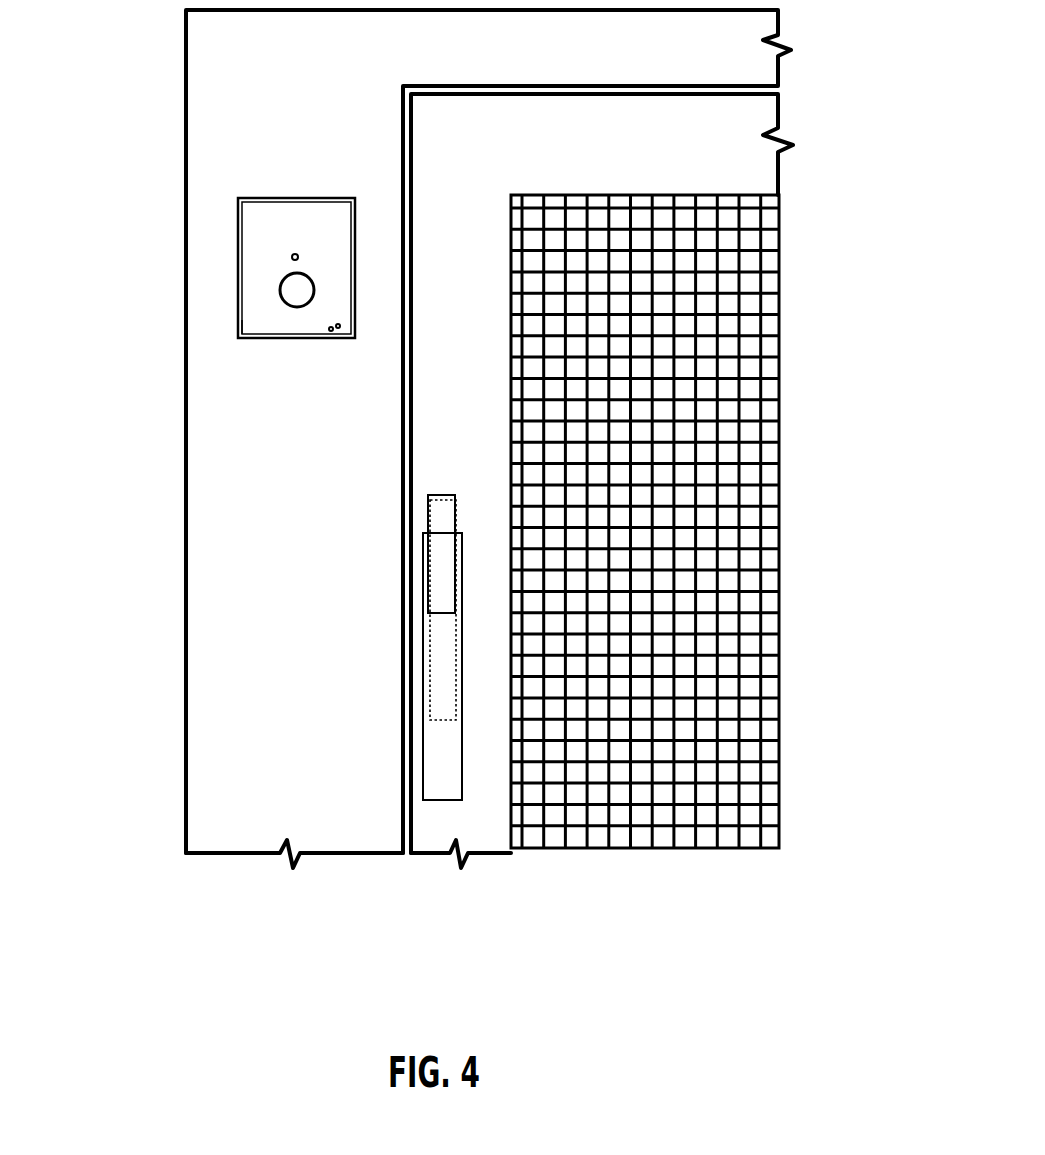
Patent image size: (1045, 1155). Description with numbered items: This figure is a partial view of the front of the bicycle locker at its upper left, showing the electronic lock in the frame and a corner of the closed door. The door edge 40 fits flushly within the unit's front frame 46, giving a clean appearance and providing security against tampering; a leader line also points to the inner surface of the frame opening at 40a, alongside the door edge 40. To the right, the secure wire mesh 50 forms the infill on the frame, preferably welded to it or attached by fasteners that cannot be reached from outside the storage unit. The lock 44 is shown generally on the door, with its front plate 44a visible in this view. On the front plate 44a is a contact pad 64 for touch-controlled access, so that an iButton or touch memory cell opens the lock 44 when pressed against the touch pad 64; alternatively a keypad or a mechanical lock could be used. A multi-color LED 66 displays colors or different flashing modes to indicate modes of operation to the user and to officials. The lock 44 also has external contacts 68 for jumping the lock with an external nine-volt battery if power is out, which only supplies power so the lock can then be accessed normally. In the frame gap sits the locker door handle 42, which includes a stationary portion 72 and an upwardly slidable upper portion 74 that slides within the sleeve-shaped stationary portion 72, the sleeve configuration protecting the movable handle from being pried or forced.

The door edge 40 is at (478, 875).
The inner wall surface 40a is at (425, 403).
The locker door handle 42 is at (408, 621).
The lock 44 is at (232, 289).
The front plate 44a is at (254, 321).
The front frame 46 is at (160, 566).
The wire mesh 50 is at (752, 333).
The contact pad 64 is at (283, 286).
The multi-color LED 66 is at (292, 255).
The external contacts 68 is at (330, 331).
The stationary portion 72 is at (420, 687).
The upper portion 74 is at (427, 510).